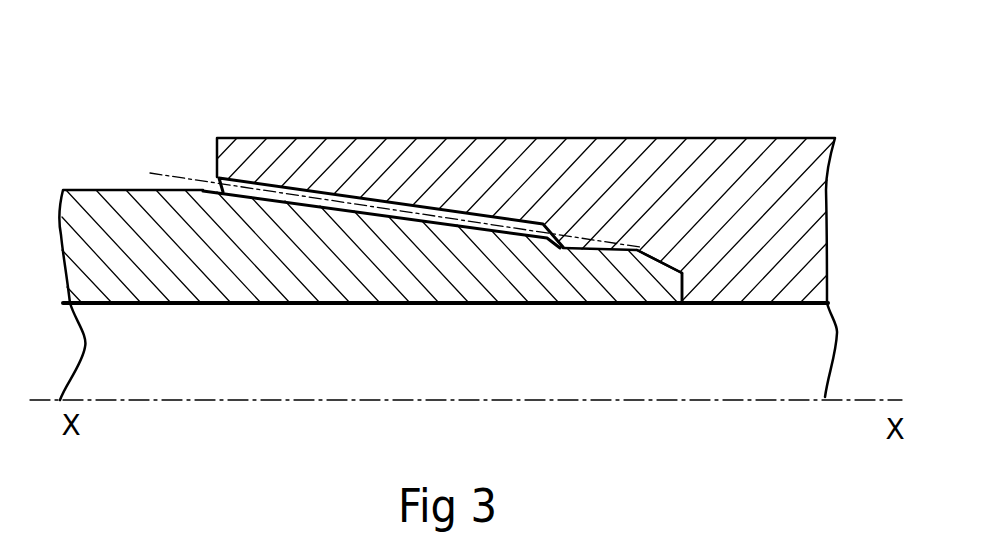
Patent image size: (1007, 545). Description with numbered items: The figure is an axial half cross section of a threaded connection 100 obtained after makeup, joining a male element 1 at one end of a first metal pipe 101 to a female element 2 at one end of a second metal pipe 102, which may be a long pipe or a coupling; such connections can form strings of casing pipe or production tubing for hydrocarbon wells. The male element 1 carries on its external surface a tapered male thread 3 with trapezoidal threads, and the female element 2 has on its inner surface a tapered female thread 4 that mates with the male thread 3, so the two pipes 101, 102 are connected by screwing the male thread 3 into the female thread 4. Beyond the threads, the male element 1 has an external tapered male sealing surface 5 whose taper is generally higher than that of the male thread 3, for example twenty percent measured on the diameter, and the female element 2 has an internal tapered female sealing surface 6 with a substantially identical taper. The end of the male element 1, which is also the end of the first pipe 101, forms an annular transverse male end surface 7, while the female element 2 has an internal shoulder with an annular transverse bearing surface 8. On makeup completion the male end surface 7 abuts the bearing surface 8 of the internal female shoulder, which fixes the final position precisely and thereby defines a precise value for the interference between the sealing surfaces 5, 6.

The male element 1 is at (368, 262).
The female element 2 is at (556, 216).
The tapered male thread 3 is at (428, 210).
The tapered female thread 4 is at (505, 224).
The male sealing surface 5 is at (660, 250).
The female sealing surface 6 is at (620, 296).
The male end surface 7 is at (710, 287).
The bearing surface 8 is at (660, 298).
The threaded connection 100 is at (302, 104).
The first metal pipe 101 is at (258, 275).
The second metal pipe 102 is at (773, 138).